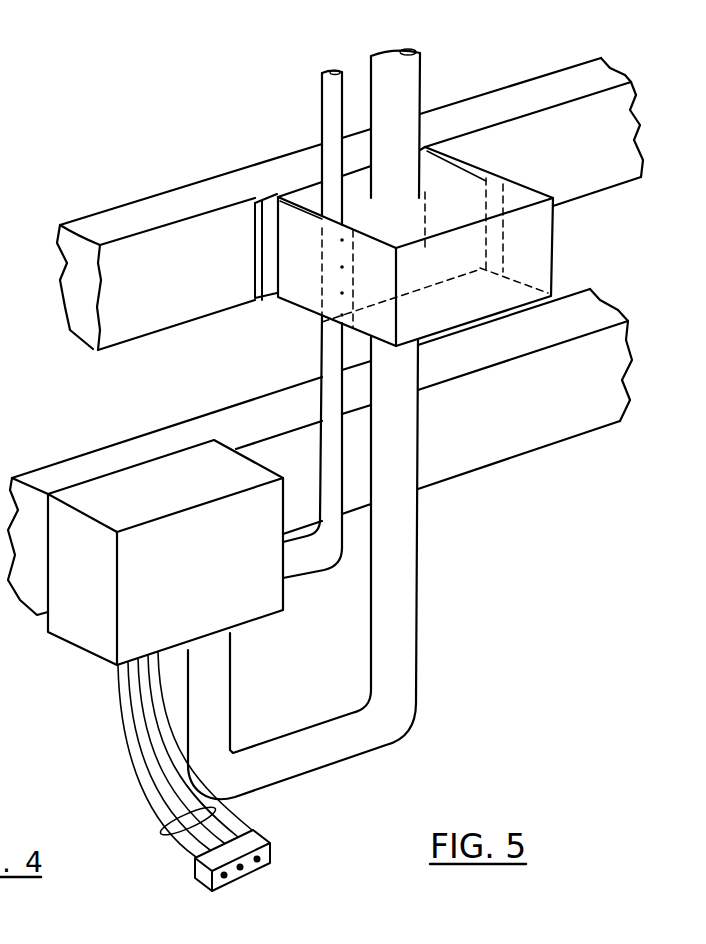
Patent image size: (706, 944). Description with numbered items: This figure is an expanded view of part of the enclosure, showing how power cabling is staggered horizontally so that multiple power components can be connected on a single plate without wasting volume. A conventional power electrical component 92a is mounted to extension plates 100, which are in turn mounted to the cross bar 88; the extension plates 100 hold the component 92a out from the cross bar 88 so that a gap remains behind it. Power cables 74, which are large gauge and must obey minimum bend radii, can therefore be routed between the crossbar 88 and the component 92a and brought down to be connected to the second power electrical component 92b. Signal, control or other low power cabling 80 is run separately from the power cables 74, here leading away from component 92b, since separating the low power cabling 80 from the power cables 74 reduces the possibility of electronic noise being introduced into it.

The power cables 74 is at (328, 102).
The cross bar 88 is at (595, 155).
The power electrical component 92a is at (485, 298).
The power electrical component 92b is at (260, 594).
The extension plates 100 is at (297, 292).
The low power cabling 80 is at (160, 826).